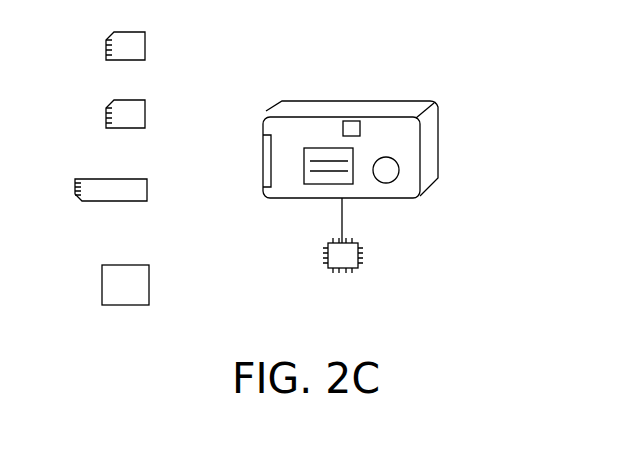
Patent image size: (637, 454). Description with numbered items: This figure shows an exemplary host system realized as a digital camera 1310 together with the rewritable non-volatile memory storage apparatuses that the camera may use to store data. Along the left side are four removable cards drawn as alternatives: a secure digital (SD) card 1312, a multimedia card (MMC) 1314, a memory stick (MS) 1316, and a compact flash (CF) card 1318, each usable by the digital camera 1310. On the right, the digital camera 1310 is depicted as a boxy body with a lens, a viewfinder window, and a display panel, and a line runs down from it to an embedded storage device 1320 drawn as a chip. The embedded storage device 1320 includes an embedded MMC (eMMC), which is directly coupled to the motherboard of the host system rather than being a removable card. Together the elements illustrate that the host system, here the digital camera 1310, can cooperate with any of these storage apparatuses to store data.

The digital camera 1310 is at (387, 149).
The secure digital (SD) card 1312 is at (159, 30).
The multimedia card (MMC) 1314 is at (159, 99).
The memory stick (MS) 1316 is at (133, 172).
The compact flash (CF) card 1318 is at (157, 270).
The embedded storage device 1320 is at (374, 255).